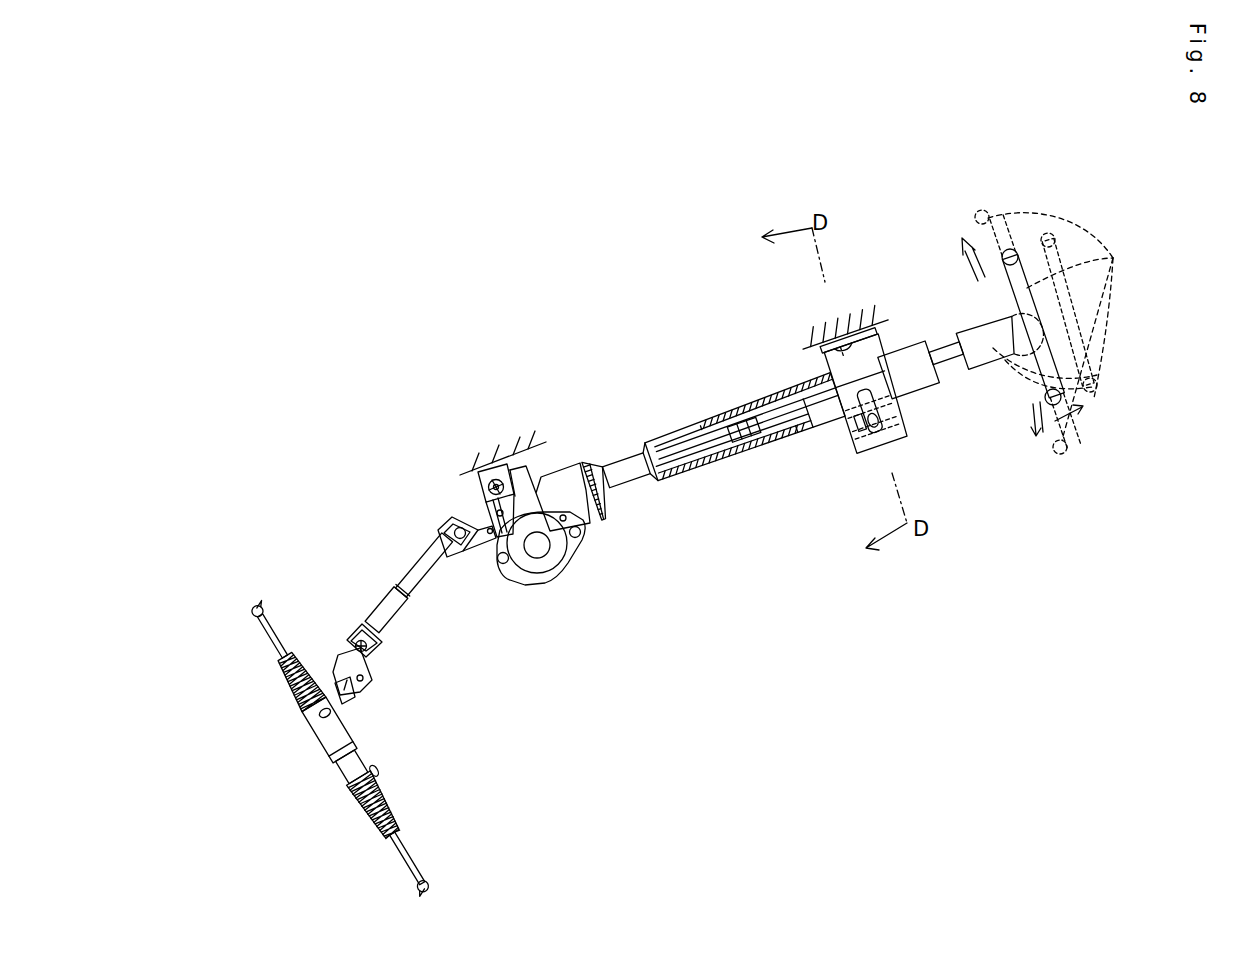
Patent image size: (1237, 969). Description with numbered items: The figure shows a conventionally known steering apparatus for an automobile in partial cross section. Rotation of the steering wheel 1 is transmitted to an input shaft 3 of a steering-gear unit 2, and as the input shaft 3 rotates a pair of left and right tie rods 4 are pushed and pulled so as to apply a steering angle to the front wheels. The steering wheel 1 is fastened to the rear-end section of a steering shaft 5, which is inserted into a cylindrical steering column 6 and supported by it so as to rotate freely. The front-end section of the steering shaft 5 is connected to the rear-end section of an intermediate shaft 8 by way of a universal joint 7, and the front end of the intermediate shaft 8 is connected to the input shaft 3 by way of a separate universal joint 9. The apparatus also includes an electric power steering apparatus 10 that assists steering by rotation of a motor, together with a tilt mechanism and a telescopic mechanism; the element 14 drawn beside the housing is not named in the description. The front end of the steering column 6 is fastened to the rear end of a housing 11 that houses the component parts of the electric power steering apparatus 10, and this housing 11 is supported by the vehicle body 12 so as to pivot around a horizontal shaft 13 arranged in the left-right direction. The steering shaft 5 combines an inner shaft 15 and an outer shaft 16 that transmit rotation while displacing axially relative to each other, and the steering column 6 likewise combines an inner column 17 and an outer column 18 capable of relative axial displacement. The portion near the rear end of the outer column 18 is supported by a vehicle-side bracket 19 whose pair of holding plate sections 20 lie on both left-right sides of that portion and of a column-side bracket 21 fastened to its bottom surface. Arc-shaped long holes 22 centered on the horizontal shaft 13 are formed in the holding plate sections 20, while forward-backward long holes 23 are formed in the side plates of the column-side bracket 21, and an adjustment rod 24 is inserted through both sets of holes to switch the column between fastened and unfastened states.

The steering wheel 1 is at (1046, 332).
The steering-gear unit 2 is at (347, 750).
The input shaft 3 is at (340, 672).
The tie rods 4 is at (262, 630).
The steering shaft 5 is at (943, 354).
The steering column 6 is at (914, 381).
The universal joint 7 is at (443, 536).
The intermediate shaft 8 is at (409, 600).
The universal joint 9 is at (372, 656).
The electric power steering apparatus 10 is at (538, 478).
The housing 11 is at (584, 498).
The vehicle body 12 is at (518, 443).
The horizontal shaft 13 is at (474, 468).
The electric motor 14 is at (553, 558).
The inner shaft 15 is at (689, 456).
The outer shaft 16 is at (774, 434).
The inner column 17 is at (669, 438).
The outer column 18 is at (764, 398).
The vehicle-side bracket 19 is at (854, 341).
The holding plate sections 20 is at (877, 371).
The column-side bracket 21 is at (838, 413).
The arc-shaped long holes 22 is at (880, 438).
The long holes 23 is at (840, 426).
The adjustment rod 24 is at (863, 422).